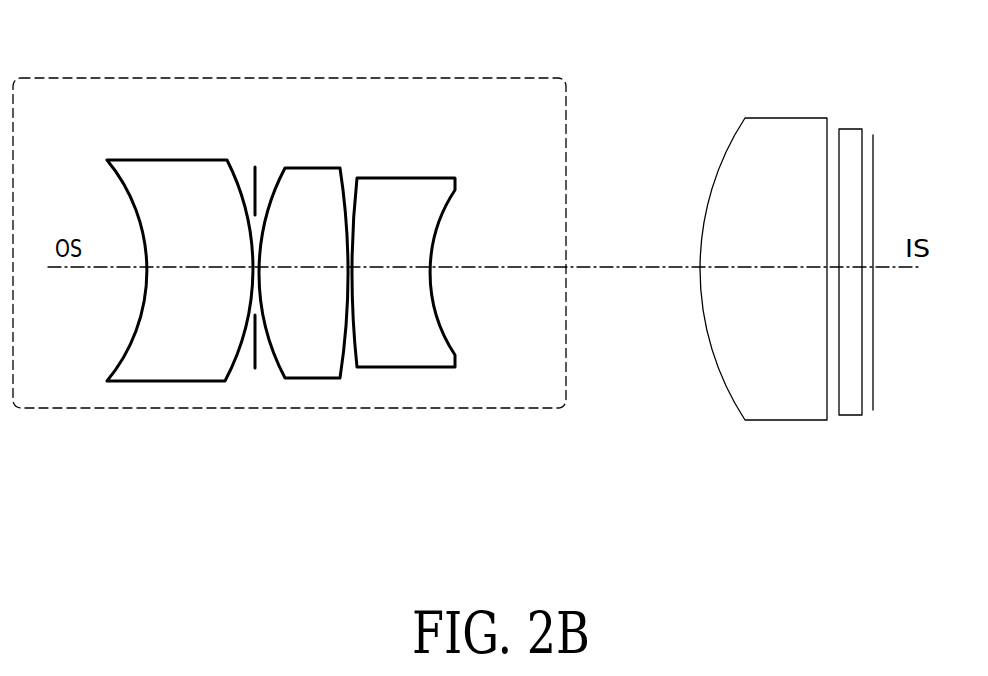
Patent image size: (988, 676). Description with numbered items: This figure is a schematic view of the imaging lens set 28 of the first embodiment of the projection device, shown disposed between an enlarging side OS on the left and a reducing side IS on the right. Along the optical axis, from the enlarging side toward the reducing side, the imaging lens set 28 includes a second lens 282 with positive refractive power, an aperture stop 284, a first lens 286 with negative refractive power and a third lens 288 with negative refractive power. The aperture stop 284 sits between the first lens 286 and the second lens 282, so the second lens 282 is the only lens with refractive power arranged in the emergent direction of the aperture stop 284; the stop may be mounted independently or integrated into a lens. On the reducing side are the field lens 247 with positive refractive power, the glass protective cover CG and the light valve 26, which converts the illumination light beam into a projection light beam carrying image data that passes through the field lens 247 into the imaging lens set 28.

The imaging lens set 28 is at (547, 79).
The second lens 282 is at (165, 158).
The aperture stop 284 is at (256, 166).
The first lens 286 is at (311, 167).
The third lens 288 is at (394, 177).
The field lens 247 is at (771, 117).
The glass protective cover CG is at (843, 128).
The light valve 26 is at (874, 150).